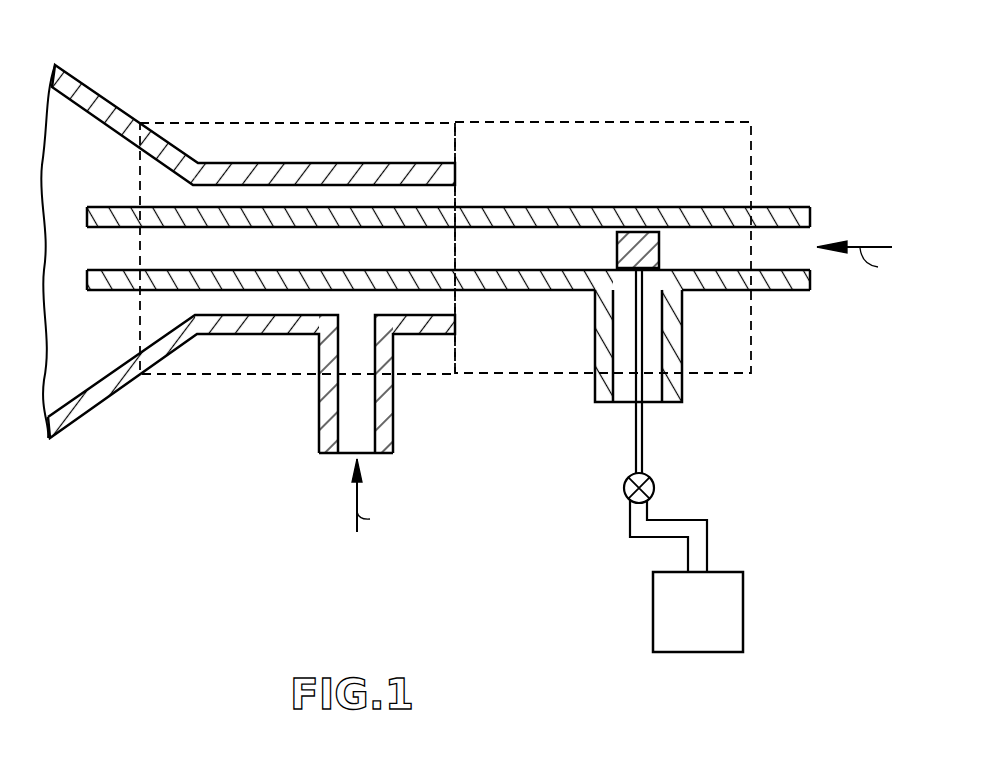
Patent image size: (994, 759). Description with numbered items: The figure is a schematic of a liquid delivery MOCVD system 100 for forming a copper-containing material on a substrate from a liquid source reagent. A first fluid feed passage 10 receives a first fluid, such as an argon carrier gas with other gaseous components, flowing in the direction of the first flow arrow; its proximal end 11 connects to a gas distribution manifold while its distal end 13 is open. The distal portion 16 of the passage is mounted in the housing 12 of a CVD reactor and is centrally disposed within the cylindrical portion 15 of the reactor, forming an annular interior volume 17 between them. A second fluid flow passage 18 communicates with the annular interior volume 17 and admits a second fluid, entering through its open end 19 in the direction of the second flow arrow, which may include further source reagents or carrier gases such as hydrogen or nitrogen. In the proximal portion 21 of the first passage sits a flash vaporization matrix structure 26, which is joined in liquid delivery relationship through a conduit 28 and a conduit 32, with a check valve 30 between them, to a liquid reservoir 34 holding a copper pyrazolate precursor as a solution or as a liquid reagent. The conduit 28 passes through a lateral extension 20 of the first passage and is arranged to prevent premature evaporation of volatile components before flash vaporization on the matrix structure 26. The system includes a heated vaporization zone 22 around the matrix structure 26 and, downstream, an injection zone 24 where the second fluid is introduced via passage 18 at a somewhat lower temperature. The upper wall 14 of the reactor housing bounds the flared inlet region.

The liquid delivery MOCVD system 100 is at (572, 56).
The first fluid feed passage 10 is at (770, 291).
The proximal end 11 is at (812, 220).
The housing of a reactor 12 is at (93, 405).
The distal end 13 is at (87, 218).
The flared upper wall of outlet nozzle 14 is at (235, 163).
The cylindrical portion 15 is at (280, 335).
The distal portion 16 is at (118, 291).
The annular interior volume 17 is at (388, 187).
The second fluid flow passage 18 is at (392, 408).
The open end 19 is at (375, 455).
The lateral extension 20 is at (684, 340).
The proximal portion 21 is at (678, 207).
The vaporization zone 22 is at (641, 122).
The injection zone 24 is at (362, 122).
The flash vaporization matrix structure 26 is at (660, 251).
The conduit 28 is at (643, 440).
The check valve 30 is at (655, 479).
The conduit 32 is at (708, 545).
The liquid reservoir 34 is at (653, 612).